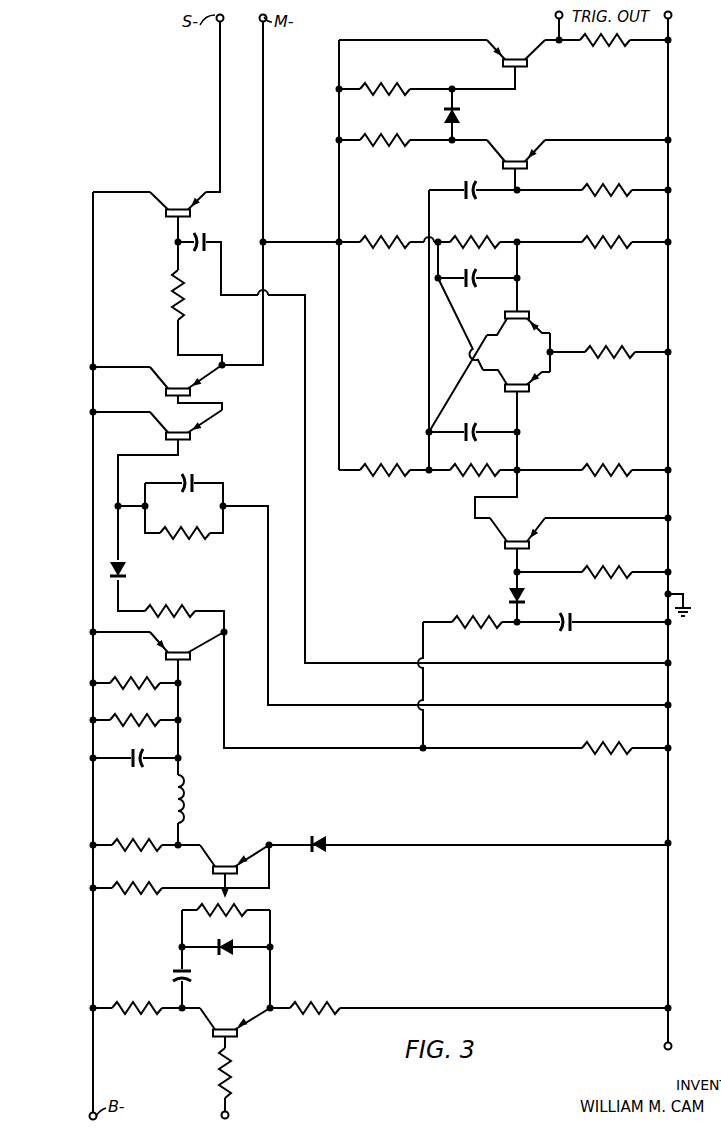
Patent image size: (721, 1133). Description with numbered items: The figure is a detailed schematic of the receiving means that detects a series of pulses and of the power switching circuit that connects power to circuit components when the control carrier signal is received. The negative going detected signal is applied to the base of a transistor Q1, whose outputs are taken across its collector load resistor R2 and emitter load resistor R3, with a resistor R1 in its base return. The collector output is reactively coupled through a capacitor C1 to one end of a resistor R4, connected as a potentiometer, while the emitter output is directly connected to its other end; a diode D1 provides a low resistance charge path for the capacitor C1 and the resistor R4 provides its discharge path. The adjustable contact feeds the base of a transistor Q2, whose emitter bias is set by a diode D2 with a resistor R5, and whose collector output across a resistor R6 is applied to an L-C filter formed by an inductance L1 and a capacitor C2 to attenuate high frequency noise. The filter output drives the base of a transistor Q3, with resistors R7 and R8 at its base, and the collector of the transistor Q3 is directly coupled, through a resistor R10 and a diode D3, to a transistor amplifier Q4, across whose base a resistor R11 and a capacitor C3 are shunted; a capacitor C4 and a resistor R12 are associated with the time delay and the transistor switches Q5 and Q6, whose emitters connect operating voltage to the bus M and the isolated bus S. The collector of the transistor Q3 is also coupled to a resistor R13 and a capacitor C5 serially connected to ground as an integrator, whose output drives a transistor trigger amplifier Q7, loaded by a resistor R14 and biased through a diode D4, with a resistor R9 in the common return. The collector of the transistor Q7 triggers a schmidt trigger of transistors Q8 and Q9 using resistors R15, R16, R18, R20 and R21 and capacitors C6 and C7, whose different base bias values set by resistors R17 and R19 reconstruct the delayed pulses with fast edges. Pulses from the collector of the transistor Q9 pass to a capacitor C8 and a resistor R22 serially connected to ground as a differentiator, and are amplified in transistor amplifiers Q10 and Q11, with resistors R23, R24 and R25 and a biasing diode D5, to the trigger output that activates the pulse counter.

The transistor Q1 is at (239, 1022).
The transistor Q2 is at (232, 863).
The transistor Q3 is at (166, 658).
The transistor amplifier Q4 is at (170, 425).
The transistor switch Q5 is at (174, 380).
The transistor switch Q6 is at (178, 205).
The transistor trigger amplifier Q7 is at (504, 546).
The transistor Q8 is at (533, 393).
The transistor Q9 is at (530, 312).
The transistor amplifier Q10 is at (514, 159).
The transistor amplifier Q11 is at (515, 56).
The resistor R1 is at (233, 1083).
The collector load resistor R2 is at (143, 1021).
The emitter load resistor R3 is at (324, 1006).
The resistor connected as a potentiometer R4 is at (222, 909).
The resistor R5 is at (144, 882).
The resistor R6 is at (142, 840).
The resistor R7 is at (156, 720).
The resistor R8 is at (150, 684).
The resistor R9 is at (605, 760).
The resistor R10 is at (188, 612).
The resistor R11 is at (208, 536).
The resistor R12 is at (174, 302).
The resistor R13 is at (484, 630).
The resistor R14 is at (613, 569).
The resistor R15 is at (388, 466).
The resistor R16 is at (469, 472).
The resistor R17 is at (620, 466).
The resistor R18 is at (588, 348).
The resistor R19 is at (620, 222).
The resistor R20 is at (488, 224).
The resistor R21 is at (396, 224).
The resistor R22 is at (621, 186).
The resistor R23 is at (386, 123).
The resistor R24 is at (398, 72).
The resistor R25 is at (599, 46).
The capacitor C1 is at (168, 978).
The capacitor C2 is at (136, 768).
The capacitor C3 is at (193, 479).
The capacitor C4 is at (208, 234).
The capacitor C5 is at (573, 616).
The capacitor C6 is at (467, 428).
The capacitor C7 is at (480, 286).
The capacitor C8 is at (466, 178).
The diode D1 is at (235, 949).
The diode D2 is at (322, 842).
The diode D3 is at (127, 571).
The diode D4 is at (510, 594).
The diode D5 is at (463, 120).
The inductance L1 is at (186, 803).